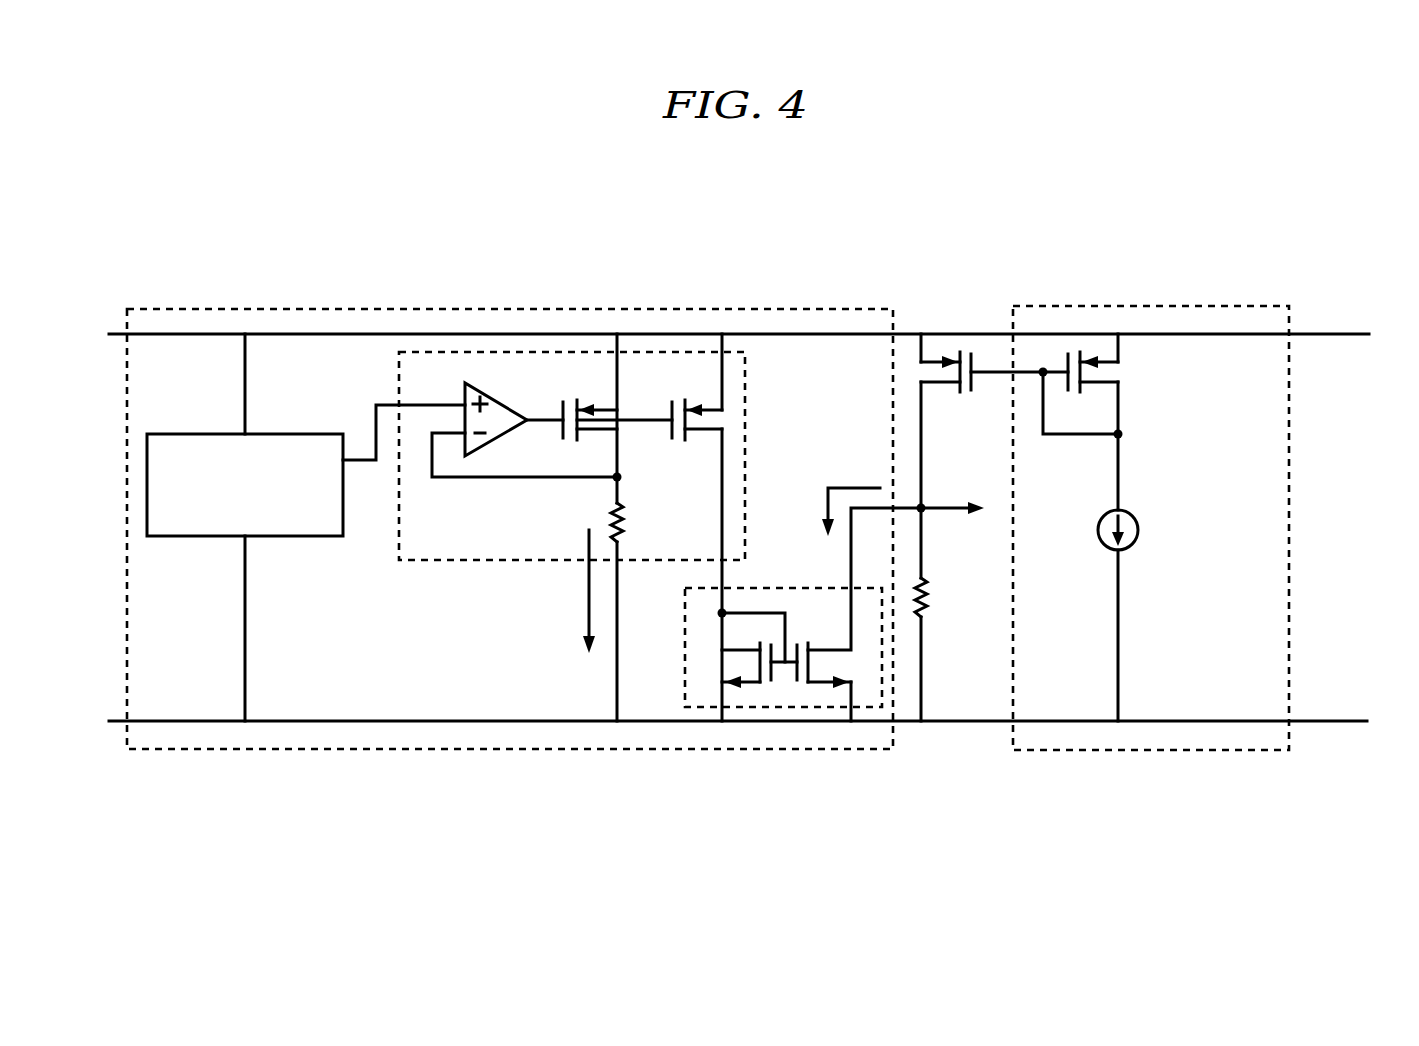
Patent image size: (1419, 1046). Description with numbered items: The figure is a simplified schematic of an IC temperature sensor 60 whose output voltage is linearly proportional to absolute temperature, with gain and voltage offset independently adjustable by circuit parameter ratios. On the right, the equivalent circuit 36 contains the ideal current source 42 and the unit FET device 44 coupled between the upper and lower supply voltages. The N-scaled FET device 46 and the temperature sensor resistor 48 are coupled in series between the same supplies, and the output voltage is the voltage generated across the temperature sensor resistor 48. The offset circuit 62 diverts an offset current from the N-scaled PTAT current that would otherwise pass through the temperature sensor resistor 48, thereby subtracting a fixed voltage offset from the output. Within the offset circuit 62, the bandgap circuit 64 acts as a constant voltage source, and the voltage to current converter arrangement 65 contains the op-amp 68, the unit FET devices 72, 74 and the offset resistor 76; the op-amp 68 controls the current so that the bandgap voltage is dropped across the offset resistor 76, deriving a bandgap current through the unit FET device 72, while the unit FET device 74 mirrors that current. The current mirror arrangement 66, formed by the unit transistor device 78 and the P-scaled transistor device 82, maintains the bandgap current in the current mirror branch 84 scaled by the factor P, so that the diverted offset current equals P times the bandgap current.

The IC temperature sensor 60 is at (238, 150).
The offset circuit 62 is at (778, 307).
The bandgap circuit 64 is at (273, 538).
The voltage to current converter arrangement 65 is at (745, 432).
The current mirror arrangement 66 is at (820, 708).
The op-amp 68 is at (494, 400).
The unit FET device 72 is at (600, 392).
The unit FET device 74 is at (707, 395).
The offset resistor 76 is at (617, 505).
The unit transistor device 78 is at (745, 695).
The P-scaled transistor device 82 is at (832, 635).
The current mirror branch 84 is at (722, 572).
The N-scaled FET device 46 is at (937, 345).
The unit FET device 44 is at (1104, 345).
The ideal current source 42 is at (1133, 512).
The temperature sensor resistor 48 is at (926, 612).
The equivalent circuit 36 is at (1289, 518).